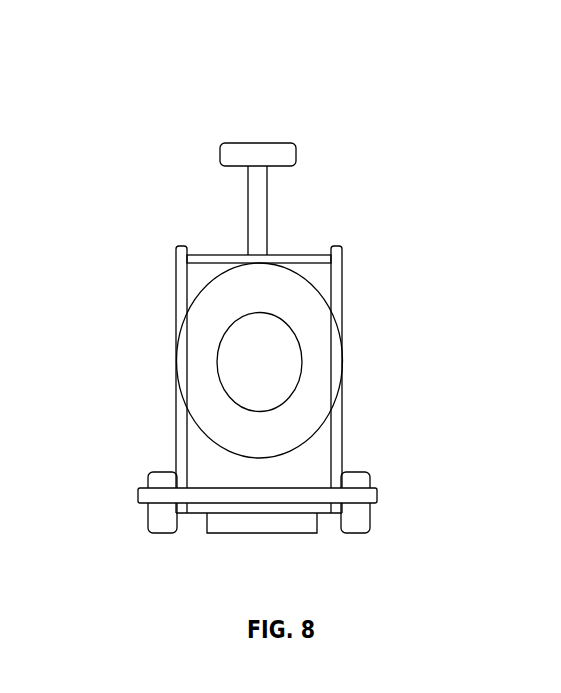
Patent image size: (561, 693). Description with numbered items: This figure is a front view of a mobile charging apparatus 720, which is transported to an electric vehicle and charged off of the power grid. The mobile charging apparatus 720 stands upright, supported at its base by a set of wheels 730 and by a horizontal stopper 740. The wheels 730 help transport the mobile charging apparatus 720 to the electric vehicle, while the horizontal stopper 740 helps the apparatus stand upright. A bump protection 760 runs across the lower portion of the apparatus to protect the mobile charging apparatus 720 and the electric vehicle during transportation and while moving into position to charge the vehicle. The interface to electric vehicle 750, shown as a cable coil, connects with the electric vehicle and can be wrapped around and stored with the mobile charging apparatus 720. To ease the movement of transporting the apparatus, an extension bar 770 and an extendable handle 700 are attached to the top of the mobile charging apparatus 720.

The extendable handle 700 is at (220, 152).
The extension bar 770 is at (247, 225).
The mobile charging apparatus 720 is at (305, 254).
The interface to electric vehicle 750 is at (187, 357).
The wheels 730 is at (147, 473).
The bump protection 760 is at (377, 490).
The horizontal stopper 740 is at (208, 534).